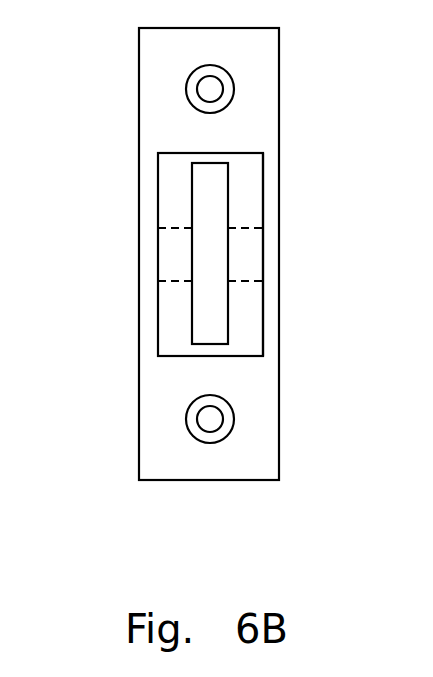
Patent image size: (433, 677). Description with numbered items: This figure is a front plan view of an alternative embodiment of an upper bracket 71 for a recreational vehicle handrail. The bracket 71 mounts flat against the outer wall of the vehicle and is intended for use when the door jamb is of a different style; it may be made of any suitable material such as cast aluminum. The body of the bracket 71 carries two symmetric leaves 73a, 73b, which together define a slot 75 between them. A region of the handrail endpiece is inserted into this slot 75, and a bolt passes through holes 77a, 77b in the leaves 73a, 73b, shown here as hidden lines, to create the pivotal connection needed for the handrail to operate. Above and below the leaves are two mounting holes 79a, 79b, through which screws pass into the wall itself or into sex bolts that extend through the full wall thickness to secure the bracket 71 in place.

The upper bracket 71 is at (90, 447).
The first leaf 73a is at (175, 317).
The second leaf 73b is at (246, 317).
The slot 75 is at (218, 306).
The first leaf hole 77a is at (158, 247).
The second leaf hole 77b is at (263, 258).
The first mounting hole 79a is at (186, 89).
The second mounting hole 79b is at (202, 397).